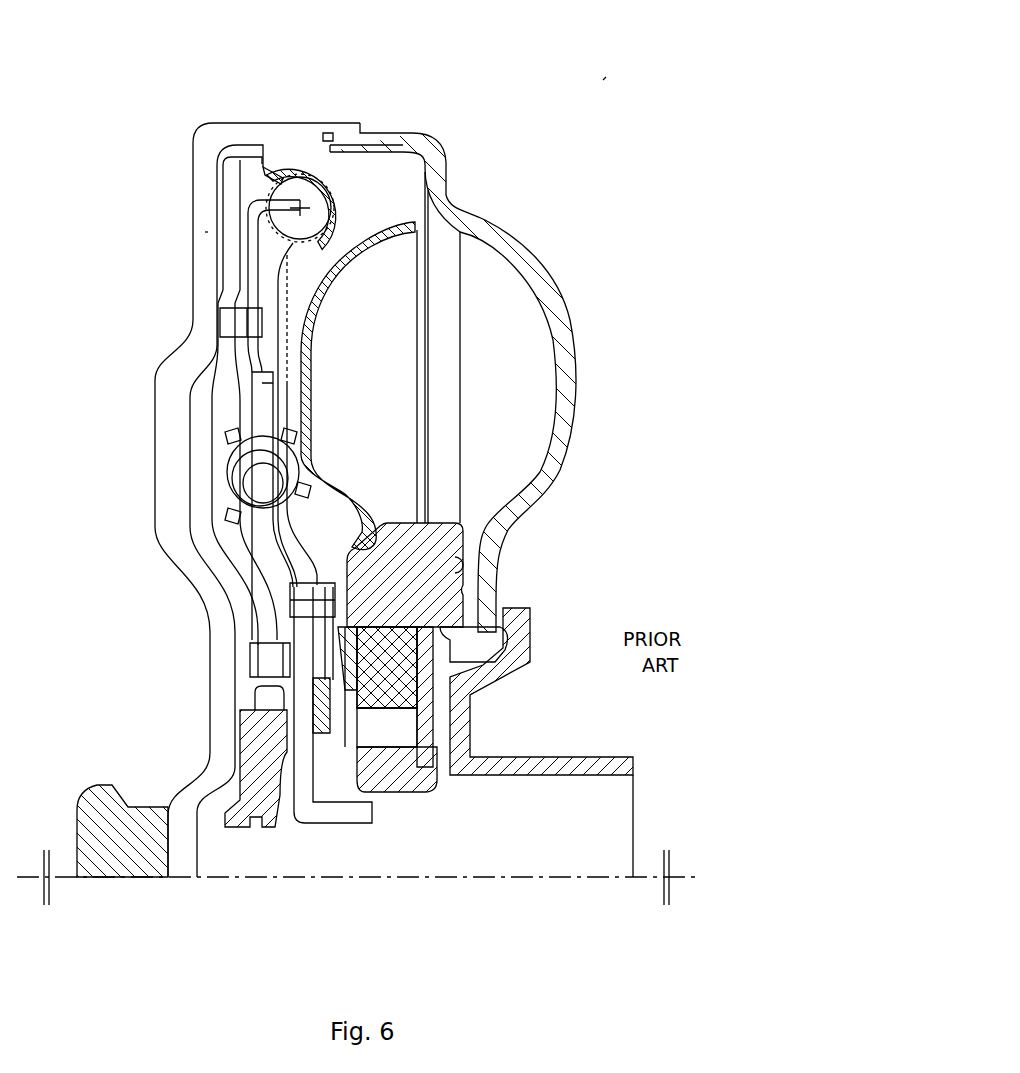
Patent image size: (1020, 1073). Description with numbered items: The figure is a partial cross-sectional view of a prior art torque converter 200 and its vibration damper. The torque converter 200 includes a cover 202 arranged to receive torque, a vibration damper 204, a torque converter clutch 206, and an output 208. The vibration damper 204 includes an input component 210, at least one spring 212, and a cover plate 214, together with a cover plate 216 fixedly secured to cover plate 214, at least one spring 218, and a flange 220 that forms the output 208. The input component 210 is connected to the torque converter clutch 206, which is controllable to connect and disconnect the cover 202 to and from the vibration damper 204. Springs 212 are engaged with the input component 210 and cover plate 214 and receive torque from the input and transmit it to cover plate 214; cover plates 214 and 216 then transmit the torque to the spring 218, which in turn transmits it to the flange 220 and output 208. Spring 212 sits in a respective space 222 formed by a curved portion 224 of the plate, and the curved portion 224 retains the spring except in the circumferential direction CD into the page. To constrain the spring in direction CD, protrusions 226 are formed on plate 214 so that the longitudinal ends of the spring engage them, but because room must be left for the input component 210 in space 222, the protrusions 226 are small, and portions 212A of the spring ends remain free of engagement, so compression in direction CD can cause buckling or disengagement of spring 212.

The torque converter 200 is at (603, 80).
The cover 202 is at (153, 510).
The vibration damper 204 is at (297, 140).
The torque converter clutch 206 is at (205, 232).
The output 208 is at (331, 838).
The input component 210 is at (247, 254).
The spring 212 is at (263, 188).
The portions of spring 212A is at (265, 187).
The cover plate 214 is at (302, 268).
The cover plate 216 is at (243, 364).
The spring 218 is at (227, 462).
The flange 220 is at (228, 597).
The space 222 is at (279, 245).
The curved portion 224 is at (301, 161).
The protrusions 226 is at (326, 187).
The circumferential direction CD is at (302, 206).